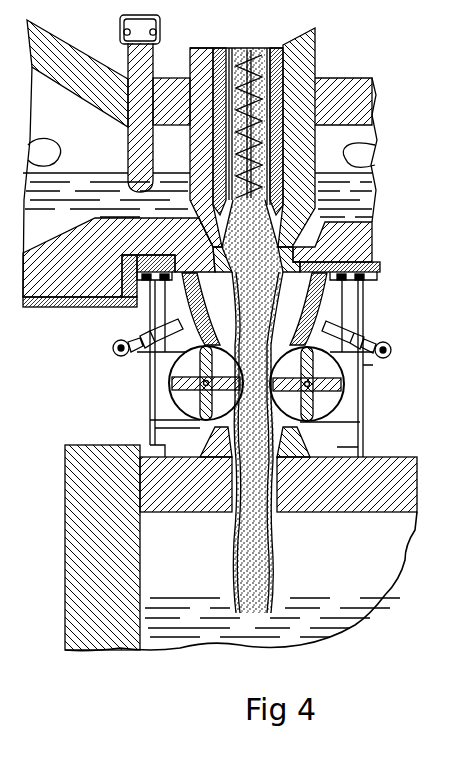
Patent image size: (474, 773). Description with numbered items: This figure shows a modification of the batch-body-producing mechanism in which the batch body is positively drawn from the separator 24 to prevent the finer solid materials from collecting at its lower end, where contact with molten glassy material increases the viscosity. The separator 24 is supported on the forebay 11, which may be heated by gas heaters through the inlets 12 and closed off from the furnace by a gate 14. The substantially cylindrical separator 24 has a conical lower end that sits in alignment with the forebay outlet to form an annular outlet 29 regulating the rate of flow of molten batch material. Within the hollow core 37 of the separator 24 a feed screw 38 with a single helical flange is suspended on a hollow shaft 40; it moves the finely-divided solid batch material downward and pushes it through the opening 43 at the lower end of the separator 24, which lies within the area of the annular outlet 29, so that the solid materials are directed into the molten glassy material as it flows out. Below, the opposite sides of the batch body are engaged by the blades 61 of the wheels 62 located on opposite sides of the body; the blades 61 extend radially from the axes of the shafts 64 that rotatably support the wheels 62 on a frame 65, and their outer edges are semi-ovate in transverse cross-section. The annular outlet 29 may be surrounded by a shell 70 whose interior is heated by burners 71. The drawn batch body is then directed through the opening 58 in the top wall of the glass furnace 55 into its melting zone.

The forebay 11 is at (366, 160).
The inlets 12 is at (55, 141).
The gate 14 is at (136, 150).
The separator 24 is at (300, 72).
The annular outlet 29 is at (335, 256).
The hollow core 37 is at (233, 49).
The feed screw 38 is at (270, 159).
The hollow shaft 40 is at (256, 50).
The opening 43 is at (274, 292).
The furnace 55 is at (386, 486).
The opening 58 is at (278, 488).
The blades 61 is at (198, 362).
The wheels 62 is at (188, 400).
The shafts 64 is at (190, 384).
The frame 65 is at (335, 432).
The shell 70 is at (332, 298).
The burners 71 is at (132, 335).